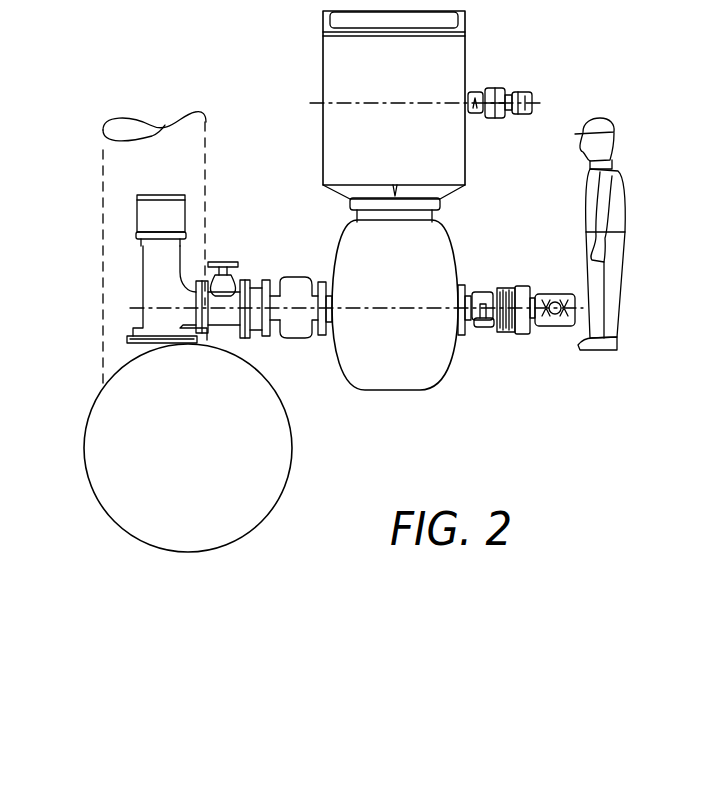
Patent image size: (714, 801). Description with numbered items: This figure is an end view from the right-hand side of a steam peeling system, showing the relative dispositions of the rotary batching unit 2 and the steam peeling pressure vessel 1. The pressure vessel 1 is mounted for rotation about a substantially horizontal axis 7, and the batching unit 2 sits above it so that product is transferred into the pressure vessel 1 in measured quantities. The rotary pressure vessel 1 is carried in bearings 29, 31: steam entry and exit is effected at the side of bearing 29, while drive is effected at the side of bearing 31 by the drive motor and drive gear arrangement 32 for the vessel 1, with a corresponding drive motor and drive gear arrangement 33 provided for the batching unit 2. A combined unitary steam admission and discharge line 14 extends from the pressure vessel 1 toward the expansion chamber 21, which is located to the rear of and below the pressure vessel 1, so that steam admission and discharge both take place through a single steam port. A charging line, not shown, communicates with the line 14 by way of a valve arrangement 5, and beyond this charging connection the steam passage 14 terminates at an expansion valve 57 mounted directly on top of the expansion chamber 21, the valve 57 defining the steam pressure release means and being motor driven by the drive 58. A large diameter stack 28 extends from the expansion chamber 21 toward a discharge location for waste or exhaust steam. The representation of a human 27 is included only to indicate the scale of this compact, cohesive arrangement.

The steam peeling vessel 1 is at (425, 380).
The rotary batching unit 2 is at (452, 63).
The valve arrangement 5 is at (215, 264).
The axis 7 is at (395, 310).
The combined unitary steam admission and discharge line 14 is at (258, 338).
The expansion chamber 21 is at (263, 502).
The human figure 27 is at (612, 269).
The stack 28 is at (102, 190).
The bearing 29 is at (290, 288).
The bearing 31 is at (487, 330).
The drive motor and drive gear arrangement 32 is at (520, 288).
The drive motor and drive gear arrangement 33 is at (520, 90).
The expansion valve 57 is at (158, 320).
The motor drive 58 is at (148, 222).